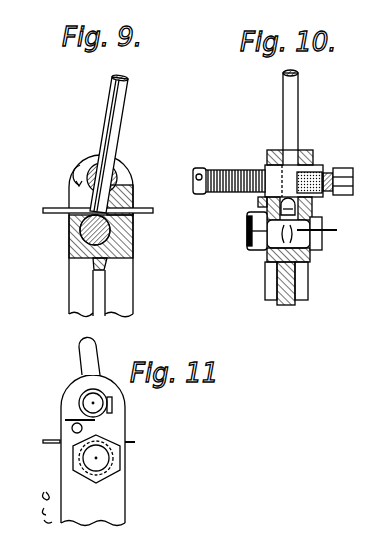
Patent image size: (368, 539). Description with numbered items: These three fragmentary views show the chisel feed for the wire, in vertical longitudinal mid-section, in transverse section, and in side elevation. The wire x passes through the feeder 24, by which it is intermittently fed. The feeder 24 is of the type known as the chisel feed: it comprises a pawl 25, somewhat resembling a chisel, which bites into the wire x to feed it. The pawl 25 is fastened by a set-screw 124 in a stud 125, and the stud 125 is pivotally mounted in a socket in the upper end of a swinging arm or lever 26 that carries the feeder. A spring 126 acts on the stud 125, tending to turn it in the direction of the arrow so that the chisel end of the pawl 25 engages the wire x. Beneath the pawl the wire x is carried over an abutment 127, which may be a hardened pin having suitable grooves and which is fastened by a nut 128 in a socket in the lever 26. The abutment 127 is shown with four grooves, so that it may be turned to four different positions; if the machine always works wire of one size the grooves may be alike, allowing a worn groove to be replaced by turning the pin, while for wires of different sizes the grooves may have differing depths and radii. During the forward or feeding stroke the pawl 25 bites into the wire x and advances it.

In FIG. 9, the feeder 24 is at (111, 157).
In FIG. 9, the pawl 25 is at (105, 124).
In FIG. 10, the pawl 25 is at (286, 121).
In FIG. 11, the pawl 25 is at (80, 366).
In FIG. 9, the swinging arm or lever 26 is at (134, 291).
In FIG. 10, the swinging arm or lever 26 is at (298, 303).
In FIG. 11, the swinging arm or lever 26 is at (83, 450).
In FIG. 10, the set-screw 124 is at (335, 195).
In FIG. 9, the stud 125 is at (90, 160).
In FIG. 10, the stud 125 is at (322, 148).
In FIG. 11, the stud 125 is at (97, 420).
In FIG. 10, the spring 126 is at (235, 193).
In FIG. 11, the spring 126 is at (100, 412).
In FIG. 10, the abutment 127 is at (317, 248).
In FIG. 10, the nut 128 is at (258, 240).
In FIG. 11, the nut 128 is at (120, 462).
In FIG. 9, the wire x is at (146, 208).
In FIG. 10, the wire x is at (323, 233).
In FIG. 11, the wire x is at (52, 438).